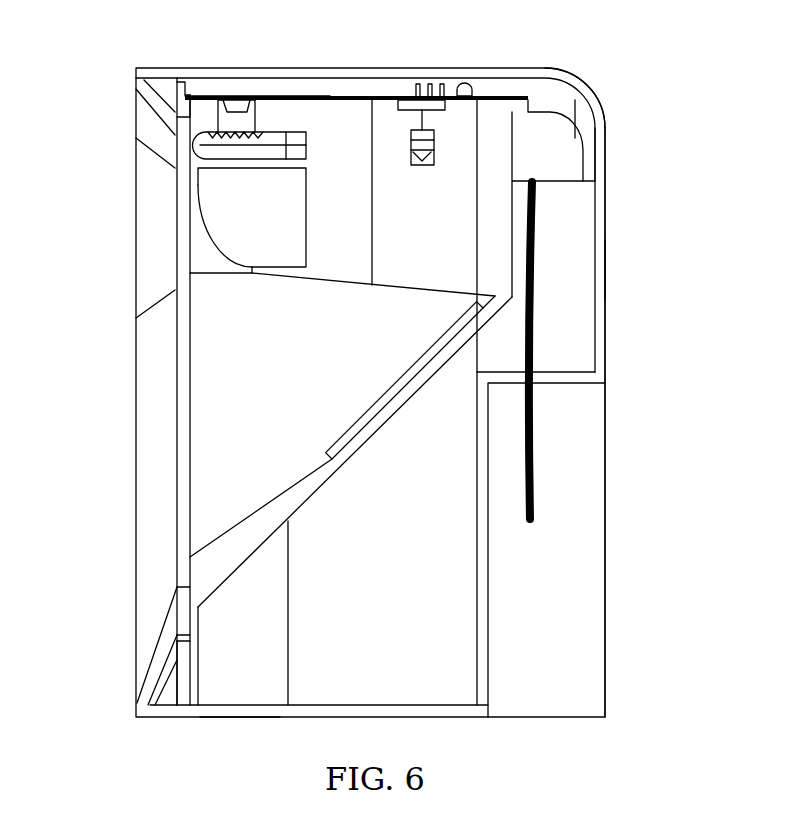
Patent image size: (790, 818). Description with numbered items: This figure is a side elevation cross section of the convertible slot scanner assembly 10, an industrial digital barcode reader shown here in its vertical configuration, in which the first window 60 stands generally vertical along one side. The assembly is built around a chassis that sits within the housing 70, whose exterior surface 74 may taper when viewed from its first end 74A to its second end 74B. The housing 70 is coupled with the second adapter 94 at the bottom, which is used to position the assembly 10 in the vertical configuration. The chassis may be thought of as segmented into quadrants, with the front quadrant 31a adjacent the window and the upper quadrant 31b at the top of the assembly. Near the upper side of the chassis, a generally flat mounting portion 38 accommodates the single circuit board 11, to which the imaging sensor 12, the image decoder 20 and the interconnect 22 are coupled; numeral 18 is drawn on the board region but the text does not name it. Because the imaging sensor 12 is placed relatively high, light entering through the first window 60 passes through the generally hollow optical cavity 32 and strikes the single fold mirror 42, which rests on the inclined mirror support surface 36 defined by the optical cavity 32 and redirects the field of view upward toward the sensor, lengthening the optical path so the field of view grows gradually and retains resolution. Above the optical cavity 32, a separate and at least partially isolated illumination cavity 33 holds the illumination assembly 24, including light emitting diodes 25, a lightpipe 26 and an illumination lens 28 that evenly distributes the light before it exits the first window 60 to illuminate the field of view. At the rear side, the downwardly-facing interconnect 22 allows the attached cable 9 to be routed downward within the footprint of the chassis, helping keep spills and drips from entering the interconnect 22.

The cable 9 is at (536, 480).
The convertible slot scanner assembly 10 is at (624, 729).
The circuit board 11 is at (455, 97).
The imaging sensor 12 is at (415, 106).
The partition wall 18 is at (372, 96).
The image decoder 20 is at (332, 96).
The interconnect 22 is at (512, 143).
The illumination assembly 24 is at (274, 84).
The light emitting diodes 25 is at (237, 105).
The lightpipe 26 is at (236, 152).
The illumination lens 28 is at (222, 203).
The front quadrant 31a is at (246, 58).
The upper quadrant 31b is at (658, 65).
The optical cavity 32 is at (322, 370).
The illumination cavity 33 is at (200, 234).
The mirror support surface 36 is at (420, 388).
The mounting portion 38 is at (182, 697).
The fold mirror 42 is at (490, 312).
The first window 60 is at (182, 278).
The housing 70 is at (599, 101).
The exterior surface 74 is at (605, 208).
The first end 74A is at (239, 730).
The second end 74B is at (642, 268).
The second adapter 94 is at (146, 711).